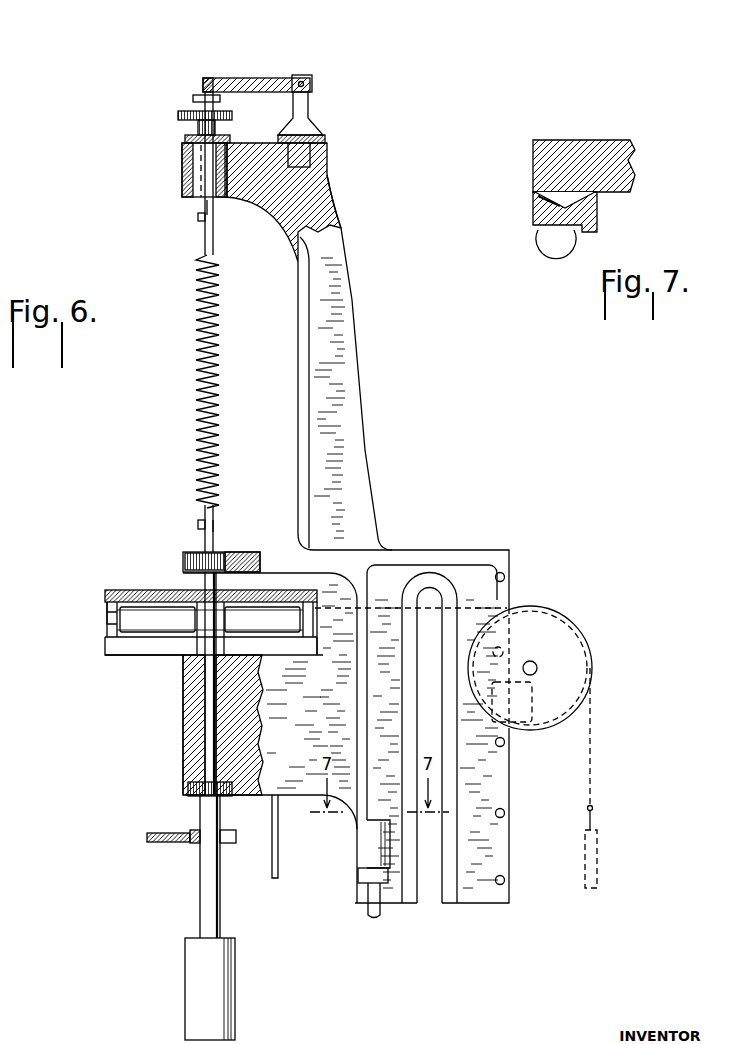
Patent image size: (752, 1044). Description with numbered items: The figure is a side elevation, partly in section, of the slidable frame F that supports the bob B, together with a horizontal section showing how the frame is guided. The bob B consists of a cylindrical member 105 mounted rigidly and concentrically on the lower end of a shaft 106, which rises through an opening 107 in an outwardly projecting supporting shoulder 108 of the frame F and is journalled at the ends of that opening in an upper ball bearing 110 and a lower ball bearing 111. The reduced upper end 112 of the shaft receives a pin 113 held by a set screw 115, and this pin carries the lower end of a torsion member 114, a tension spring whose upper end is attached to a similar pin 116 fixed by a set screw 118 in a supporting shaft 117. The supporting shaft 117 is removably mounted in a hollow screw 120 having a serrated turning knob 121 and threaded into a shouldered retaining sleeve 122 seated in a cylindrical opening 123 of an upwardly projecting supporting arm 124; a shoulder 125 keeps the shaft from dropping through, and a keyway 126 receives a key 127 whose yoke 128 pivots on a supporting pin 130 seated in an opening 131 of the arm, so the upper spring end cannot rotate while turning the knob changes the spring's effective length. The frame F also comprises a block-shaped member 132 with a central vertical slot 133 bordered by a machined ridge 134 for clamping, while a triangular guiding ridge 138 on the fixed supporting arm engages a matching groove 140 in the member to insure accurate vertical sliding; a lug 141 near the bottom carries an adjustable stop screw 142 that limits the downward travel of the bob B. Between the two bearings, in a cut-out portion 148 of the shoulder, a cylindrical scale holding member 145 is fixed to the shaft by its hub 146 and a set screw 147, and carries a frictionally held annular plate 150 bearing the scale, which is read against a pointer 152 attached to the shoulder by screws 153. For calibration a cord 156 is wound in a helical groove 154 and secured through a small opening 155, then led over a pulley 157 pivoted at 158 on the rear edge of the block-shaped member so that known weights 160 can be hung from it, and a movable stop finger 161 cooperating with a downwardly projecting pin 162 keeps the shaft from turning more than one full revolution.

In FIG. 6, the cylindrical member 105 is at (190, 976).
In FIG. 6, the shaft 106 is at (200, 880).
In FIG. 6, the opening 107 is at (204, 586).
In FIG. 6, the supporting shoulder 108 is at (290, 762).
In FIG. 6, the ball bearing 110 is at (188, 558).
In FIG. 6, the ball bearing 111 is at (188, 790).
In FIG. 6, the reduced upper end of shaft 112 is at (199, 525).
In FIG. 6, the pin 113 is at (216, 526).
In FIG. 6, the torsion member 114 is at (197, 375).
In FIG. 6, the set screw 115 is at (205, 514).
In FIG. 6, the pin 116 is at (205, 240).
In FIG. 6, the supporting shaft 117 is at (214, 206).
In FIG. 6, the set screw 118 is at (199, 218).
In FIG. 6, the hollow screw 120 is at (200, 128).
In FIG. 6, the serrated turning knob 121 is at (192, 116).
In FIG. 6, the shouldered retaining sleeve 122 is at (193, 152).
In FIG. 6, the cylindrical opening 123 is at (193, 182).
In FIG. 6, the supporting arm 124 is at (356, 390).
In FIG. 6, the shoulder 125 is at (206, 100).
In FIG. 6, the groove or keyway 126 is at (207, 78).
In FIG. 6, the key 127 is at (255, 78).
In FIG. 6, the yoke 128 is at (312, 82).
In FIG. 6, the supporting pin 130 is at (310, 106).
In FIG. 6, the opening 131 is at (312, 162).
In FIG. 6, the block-shaped member 132 is at (490, 592).
In FIG. 6, the slot 133 is at (433, 893).
In FIG. 6, the ridge 134 is at (456, 849).
In FIG. 7, the guiding ridge 138 is at (568, 206).
In FIG. 7, the groove 140 is at (552, 198).
In FIG. 6, the lug 141 is at (375, 848).
In FIG. 6, the stop screw 142 is at (372, 906).
In FIG. 6, the scale holding member 145 is at (105, 592).
In FIG. 6, the hub 146 is at (226, 622).
In FIG. 6, the set screw 147 is at (195, 622).
In FIG. 6, the cut-out portion 148 is at (272, 576).
In FIG. 6, the annular plate 150 is at (108, 630).
In FIG. 6, the pointer 152 is at (108, 652).
In FIG. 6, the screws 153 is at (183, 686).
In FIG. 6, the helical groove 154 is at (108, 618).
In FIG. 6, the opening 155 is at (106, 606).
In FIG. 6, the cord 156 is at (372, 608).
In FIG. 6, the pulley 157 is at (560, 632).
In FIG. 6, the pivot 158 is at (538, 669).
In FIG. 6, the weights 160 is at (598, 851).
In FIG. 6, the stop finger 161 is at (150, 836).
In FIG. 6, the pin 162 is at (275, 868).
In FIG. 6, the frame F is at (369, 256).
In FIG. 6, the bob B is at (250, 988).